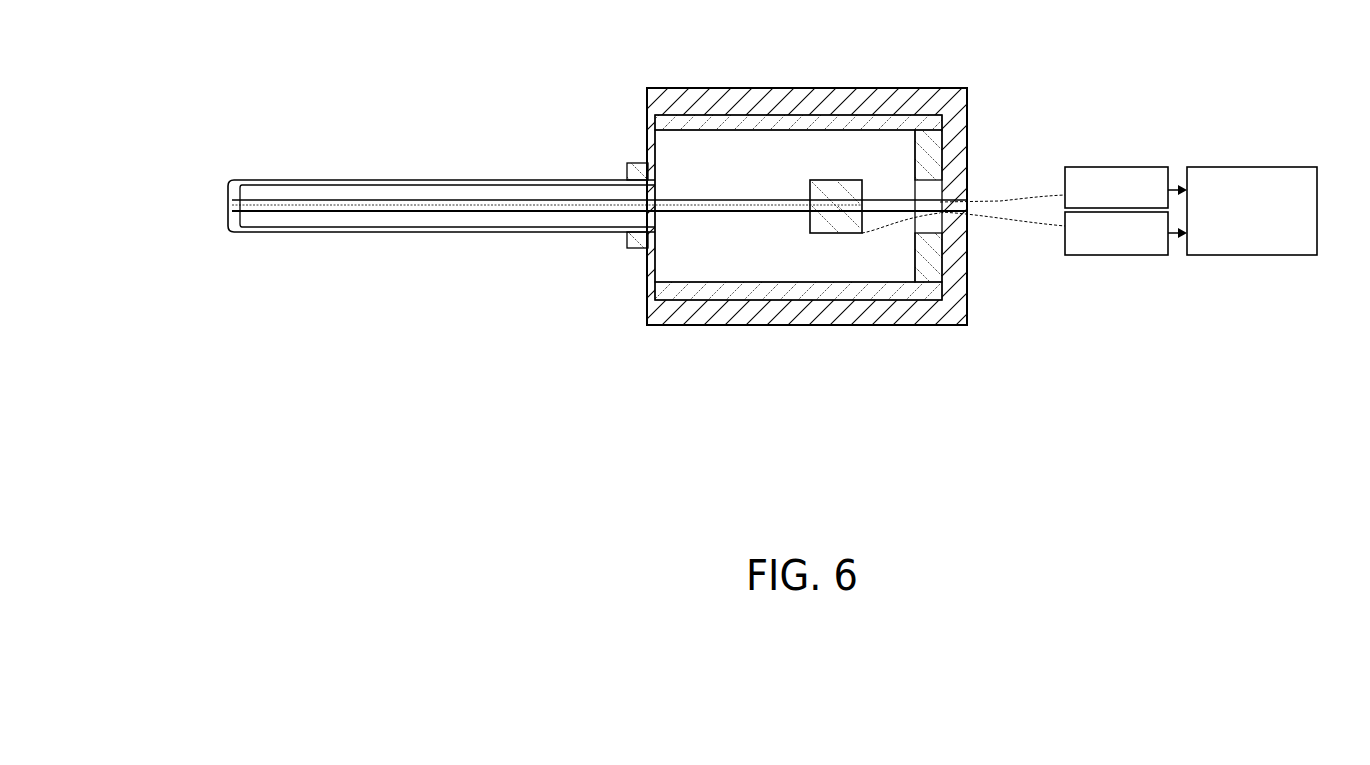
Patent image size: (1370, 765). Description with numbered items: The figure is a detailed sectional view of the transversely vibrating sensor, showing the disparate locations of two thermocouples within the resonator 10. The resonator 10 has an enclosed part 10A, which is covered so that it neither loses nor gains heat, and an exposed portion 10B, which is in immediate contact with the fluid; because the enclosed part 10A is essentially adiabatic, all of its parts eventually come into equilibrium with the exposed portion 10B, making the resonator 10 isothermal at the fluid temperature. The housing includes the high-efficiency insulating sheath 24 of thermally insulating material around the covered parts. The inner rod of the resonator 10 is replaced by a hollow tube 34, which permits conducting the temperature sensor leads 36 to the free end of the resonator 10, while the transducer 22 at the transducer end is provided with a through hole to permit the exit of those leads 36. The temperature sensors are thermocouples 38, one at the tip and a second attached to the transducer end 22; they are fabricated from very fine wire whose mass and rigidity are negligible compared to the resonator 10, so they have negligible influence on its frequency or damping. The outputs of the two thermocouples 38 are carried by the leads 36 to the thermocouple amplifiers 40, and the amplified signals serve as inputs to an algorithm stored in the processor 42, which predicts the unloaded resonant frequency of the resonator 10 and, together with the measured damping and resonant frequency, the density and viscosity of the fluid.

The resonator 10 is at (547, 127).
The enclosed part of the resonator 10A is at (743, 222).
The exposed portion of the resonator 10B is at (510, 238).
The transducer 22 is at (823, 223).
The insulating sheath 24 is at (967, 300).
The hollow tube 34 is at (373, 212).
The temperature sensor leads 36 is at (1042, 220).
The thermocouples 38 is at (231, 204).
The thermocouple amplifiers 40 is at (1126, 211).
The processor 42 is at (1252, 211).